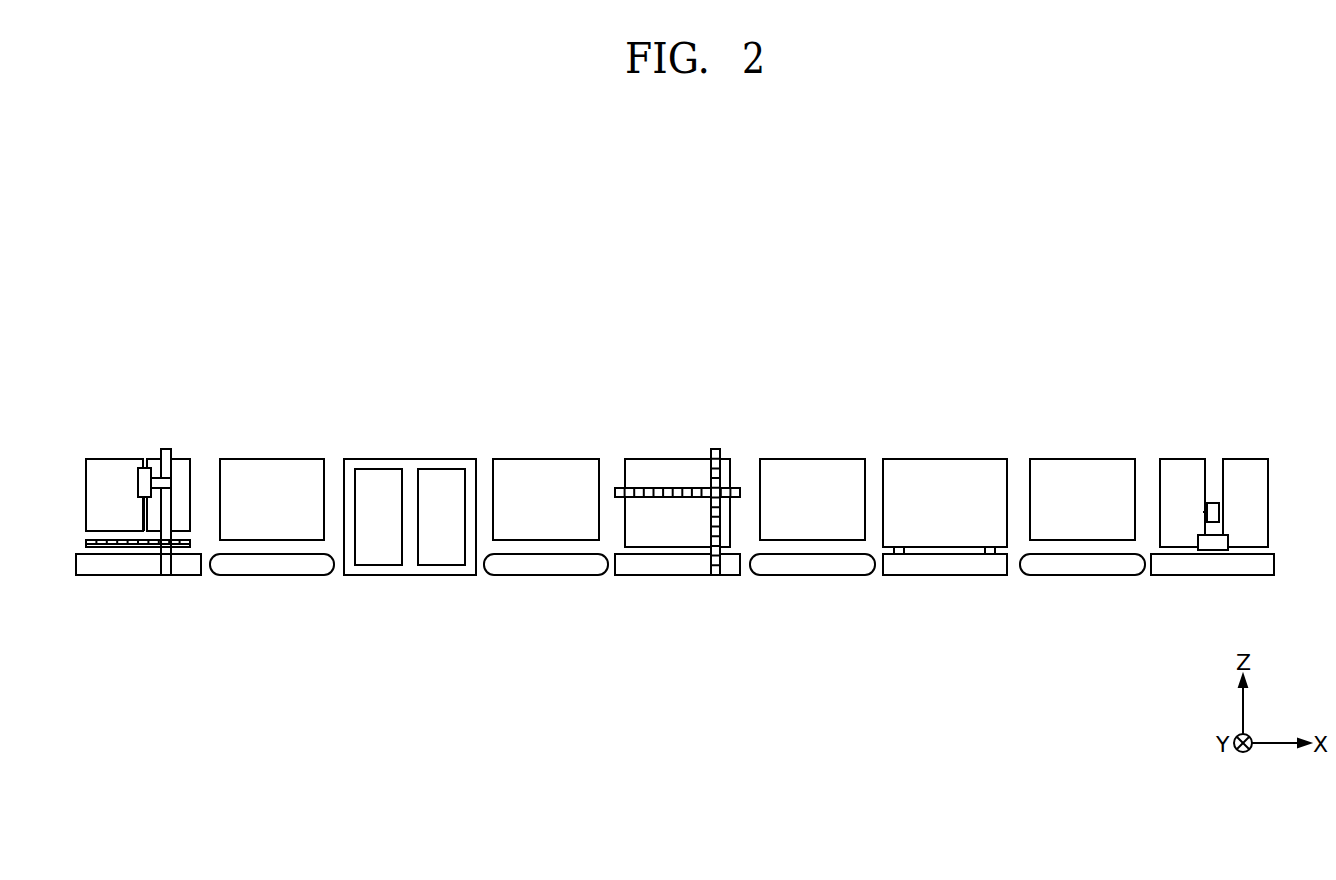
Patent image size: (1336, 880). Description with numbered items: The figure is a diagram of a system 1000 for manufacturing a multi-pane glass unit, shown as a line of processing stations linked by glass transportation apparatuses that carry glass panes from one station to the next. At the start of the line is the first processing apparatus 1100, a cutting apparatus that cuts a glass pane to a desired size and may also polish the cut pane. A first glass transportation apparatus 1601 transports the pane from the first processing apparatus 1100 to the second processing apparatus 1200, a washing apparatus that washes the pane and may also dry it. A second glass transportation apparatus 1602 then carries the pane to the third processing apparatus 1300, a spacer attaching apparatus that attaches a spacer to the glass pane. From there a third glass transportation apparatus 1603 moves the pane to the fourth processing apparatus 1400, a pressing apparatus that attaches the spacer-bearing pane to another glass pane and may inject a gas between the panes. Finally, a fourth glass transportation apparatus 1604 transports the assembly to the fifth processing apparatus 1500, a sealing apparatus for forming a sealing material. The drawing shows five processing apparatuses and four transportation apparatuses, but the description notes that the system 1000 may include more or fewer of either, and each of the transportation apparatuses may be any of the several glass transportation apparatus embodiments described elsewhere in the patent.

The system for manufacturing a multi-pane glass unit 1000 is at (1267, 294).
The first processing apparatus 1100 is at (138, 440).
The first glass transportation apparatus 1601 is at (261, 440).
The second processing apparatus 1200 is at (407, 440).
The second glass transportation apparatus 1602 is at (539, 440).
The third processing apparatus 1300 is at (669, 440).
The third glass transportation apparatus 1603 is at (810, 440).
The fourth processing apparatus 1400 is at (937, 440).
The fourth glass transportation apparatus 1604 is at (1079, 440).
The fifth processing apparatus 1500 is at (1216, 440).